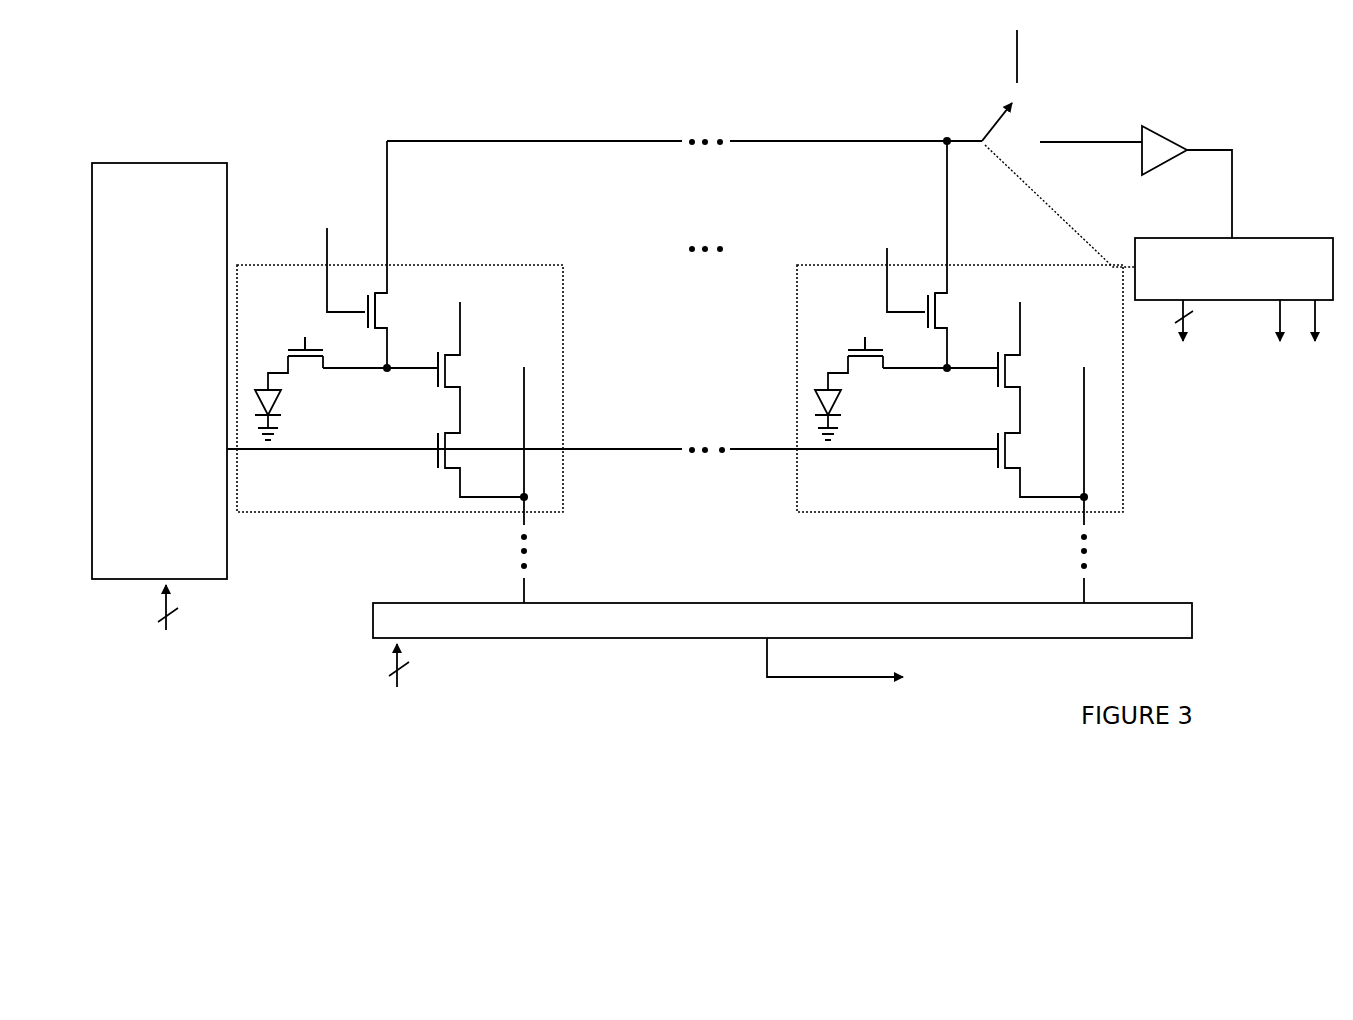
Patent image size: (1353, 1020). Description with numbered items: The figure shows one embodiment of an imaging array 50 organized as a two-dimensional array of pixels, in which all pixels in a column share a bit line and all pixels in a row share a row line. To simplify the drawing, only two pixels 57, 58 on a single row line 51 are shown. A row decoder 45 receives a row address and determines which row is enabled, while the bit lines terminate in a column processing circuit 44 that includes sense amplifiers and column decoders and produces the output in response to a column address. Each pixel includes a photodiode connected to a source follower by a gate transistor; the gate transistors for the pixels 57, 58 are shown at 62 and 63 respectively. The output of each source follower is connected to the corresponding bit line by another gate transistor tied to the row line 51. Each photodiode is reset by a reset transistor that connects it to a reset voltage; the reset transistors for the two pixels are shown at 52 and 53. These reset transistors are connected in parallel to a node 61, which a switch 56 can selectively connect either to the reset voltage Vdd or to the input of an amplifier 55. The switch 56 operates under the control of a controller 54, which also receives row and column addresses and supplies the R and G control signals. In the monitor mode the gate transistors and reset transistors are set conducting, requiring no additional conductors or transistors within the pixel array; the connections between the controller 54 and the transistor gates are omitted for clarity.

The imaging array 50 is at (315, 73).
The row decoder 45 is at (172, 162).
The node 61 is at (553, 140).
The pixel 57 is at (400, 372).
The pixel 58 is at (960, 372).
The reset transistor 52 is at (384, 328).
The reset transistor 53 is at (955, 311).
The gate transistor 62 is at (297, 364).
The gate transistor 63 is at (853, 373).
The row line 51 is at (590, 452).
The switch 56 is at (982, 139).
The amplifier 55 is at (1157, 138).
The controller 54 is at (1312, 240).
The column processing circuit 44 is at (866, 603).